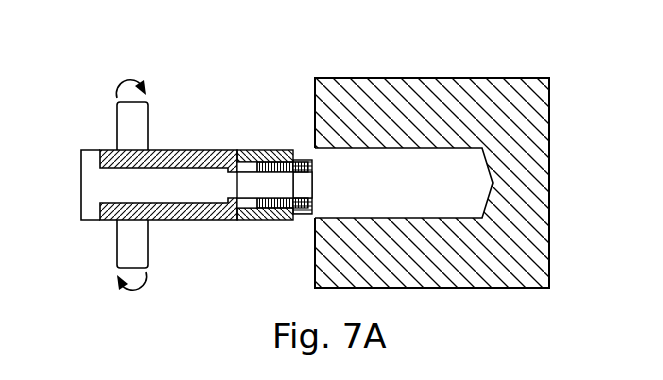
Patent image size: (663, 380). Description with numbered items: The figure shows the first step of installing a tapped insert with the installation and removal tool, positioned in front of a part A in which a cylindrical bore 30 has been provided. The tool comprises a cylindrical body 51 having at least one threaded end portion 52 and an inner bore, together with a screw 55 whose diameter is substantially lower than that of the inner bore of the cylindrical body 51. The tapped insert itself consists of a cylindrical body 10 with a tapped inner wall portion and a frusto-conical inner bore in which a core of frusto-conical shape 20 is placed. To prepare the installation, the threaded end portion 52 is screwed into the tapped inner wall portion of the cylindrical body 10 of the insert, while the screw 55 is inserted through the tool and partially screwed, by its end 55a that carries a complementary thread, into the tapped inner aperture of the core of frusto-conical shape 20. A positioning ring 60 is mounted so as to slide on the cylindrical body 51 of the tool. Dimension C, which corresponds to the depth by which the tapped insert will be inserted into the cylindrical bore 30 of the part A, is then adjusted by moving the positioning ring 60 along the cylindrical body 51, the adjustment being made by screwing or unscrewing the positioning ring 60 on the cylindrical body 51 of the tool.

The cylindrical body 10 is at (276, 188).
The core of frusto-conical shape 20 is at (266, 178).
The cylindrical bore 30 is at (362, 166).
The cylindrical body 51 is at (170, 216).
The threaded end portion 52 is at (223, 219).
The screw 55 is at (133, 208).
The end of the screw 55a is at (283, 219).
The positioning ring 60 is at (130, 243).
The part A is at (450, 163).
The dimension C is at (313, 115).